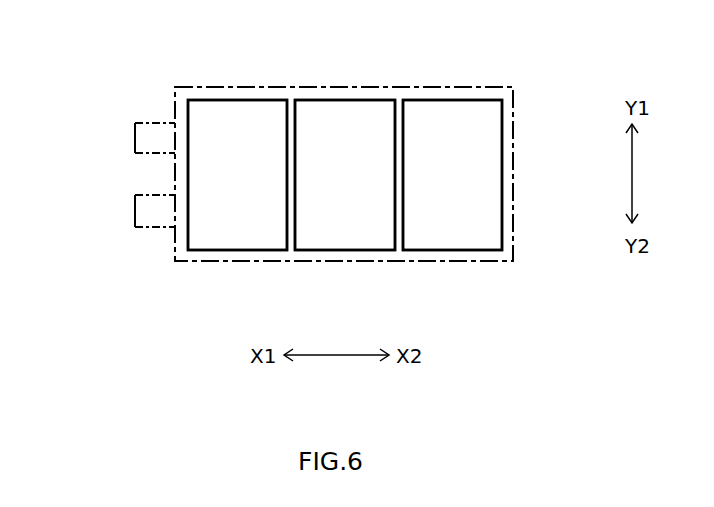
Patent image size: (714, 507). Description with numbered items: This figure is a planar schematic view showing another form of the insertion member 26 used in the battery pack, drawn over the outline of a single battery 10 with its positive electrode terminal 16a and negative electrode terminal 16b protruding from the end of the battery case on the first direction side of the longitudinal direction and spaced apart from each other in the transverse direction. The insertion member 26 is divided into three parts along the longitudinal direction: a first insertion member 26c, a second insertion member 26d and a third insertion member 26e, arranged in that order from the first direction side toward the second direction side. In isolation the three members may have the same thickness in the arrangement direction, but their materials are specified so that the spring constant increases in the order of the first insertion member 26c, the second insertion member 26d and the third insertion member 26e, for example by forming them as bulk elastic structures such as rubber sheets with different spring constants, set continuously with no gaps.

The single battery 10 is at (184, 80).
The insertion member 26 is at (355, 94).
The first insertion member 26c is at (237, 248).
The second insertion member 26d is at (346, 248).
The third insertion member 26e is at (454, 248).
The positive electrode terminal 16a is at (150, 141).
The negative electrode terminal 16b is at (150, 215).